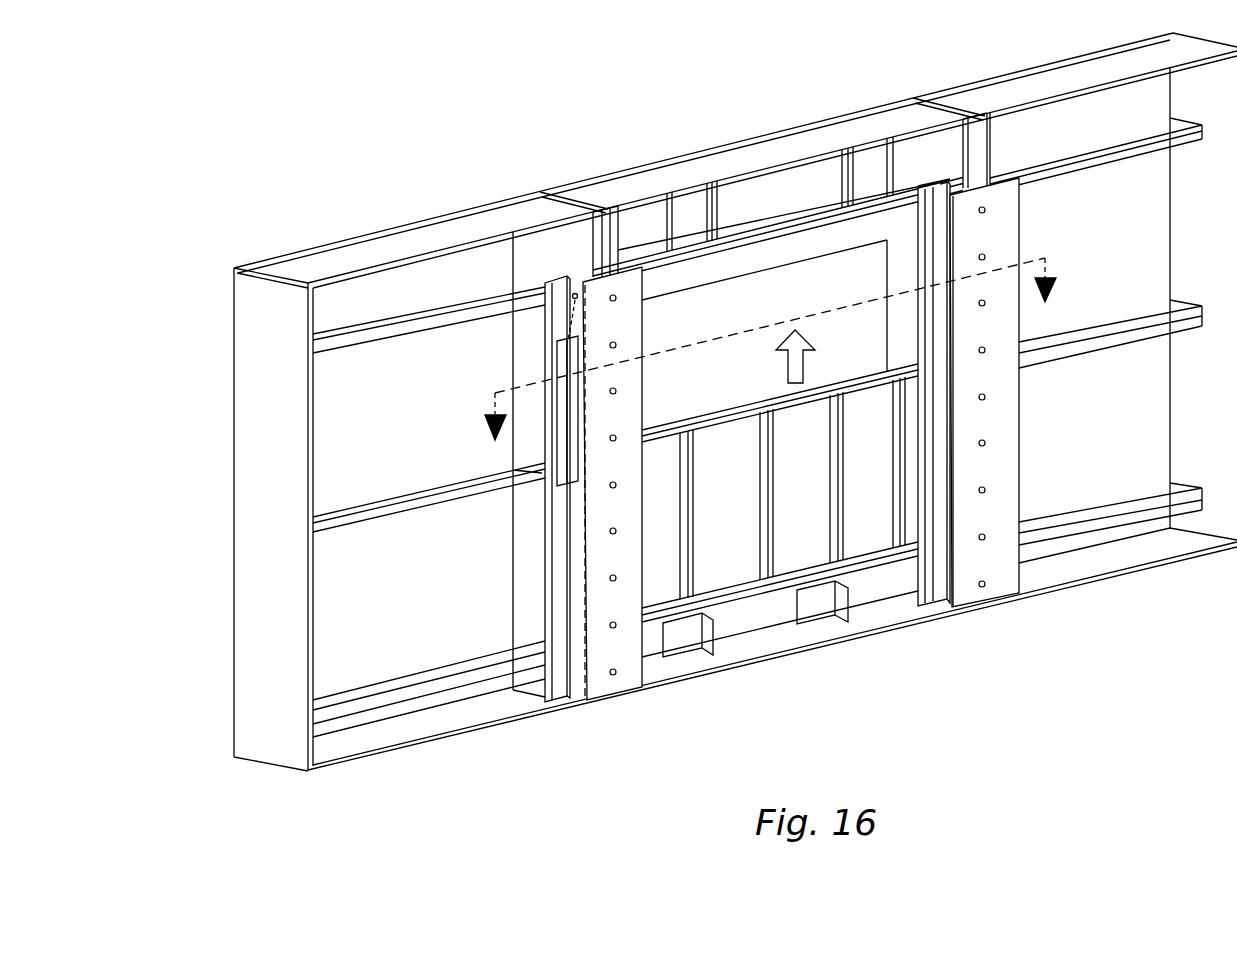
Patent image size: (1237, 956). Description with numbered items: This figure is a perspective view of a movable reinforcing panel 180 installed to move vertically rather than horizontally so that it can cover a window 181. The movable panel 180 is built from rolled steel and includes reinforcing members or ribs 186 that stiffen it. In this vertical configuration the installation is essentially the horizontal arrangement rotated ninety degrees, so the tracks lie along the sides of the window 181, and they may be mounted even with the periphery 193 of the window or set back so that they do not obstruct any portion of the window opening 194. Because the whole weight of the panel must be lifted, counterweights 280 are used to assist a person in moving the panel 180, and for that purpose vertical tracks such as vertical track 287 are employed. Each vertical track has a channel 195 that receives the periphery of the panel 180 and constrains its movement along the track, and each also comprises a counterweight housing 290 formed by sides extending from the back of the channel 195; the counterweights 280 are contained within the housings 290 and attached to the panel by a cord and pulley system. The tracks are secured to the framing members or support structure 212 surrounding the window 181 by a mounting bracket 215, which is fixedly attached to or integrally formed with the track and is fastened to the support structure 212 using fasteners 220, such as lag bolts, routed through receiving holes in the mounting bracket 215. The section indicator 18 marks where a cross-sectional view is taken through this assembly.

The support structure 212 is at (608, 212).
The channel 195 is at (940, 185).
The vertical track 287 is at (945, 187).
The window 181 is at (825, 268).
The counterweight housing 290 is at (545, 590).
The section line 18 is at (766, 365).
The window opening 194 is at (776, 316).
The periphery 193 is at (900, 318).
The counterweight 280 is at (557, 357).
The movable panel 180 is at (737, 405).
The reinforcing member 186 is at (773, 471).
The fastener 220 is at (985, 397).
The mounting bracket 215 is at (642, 565).